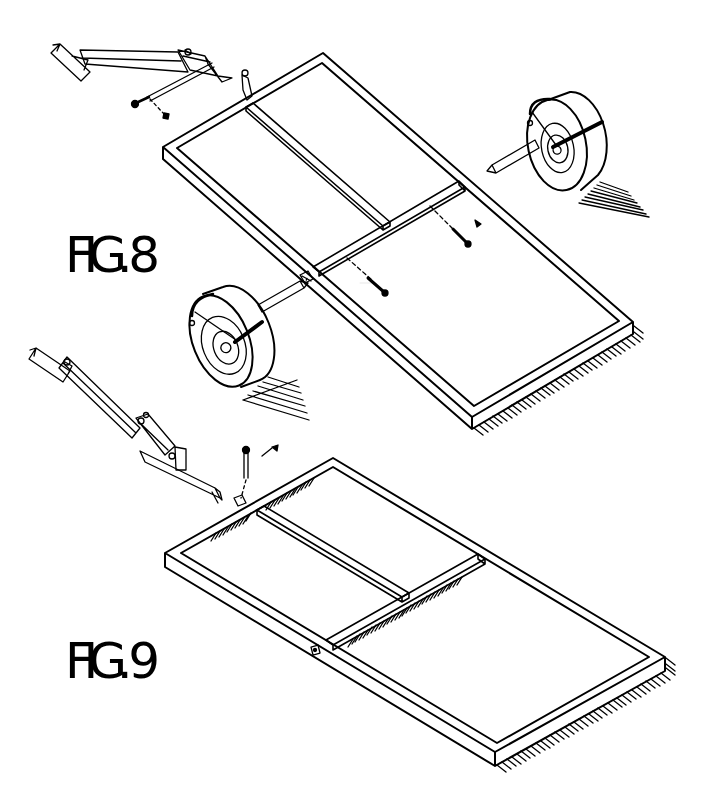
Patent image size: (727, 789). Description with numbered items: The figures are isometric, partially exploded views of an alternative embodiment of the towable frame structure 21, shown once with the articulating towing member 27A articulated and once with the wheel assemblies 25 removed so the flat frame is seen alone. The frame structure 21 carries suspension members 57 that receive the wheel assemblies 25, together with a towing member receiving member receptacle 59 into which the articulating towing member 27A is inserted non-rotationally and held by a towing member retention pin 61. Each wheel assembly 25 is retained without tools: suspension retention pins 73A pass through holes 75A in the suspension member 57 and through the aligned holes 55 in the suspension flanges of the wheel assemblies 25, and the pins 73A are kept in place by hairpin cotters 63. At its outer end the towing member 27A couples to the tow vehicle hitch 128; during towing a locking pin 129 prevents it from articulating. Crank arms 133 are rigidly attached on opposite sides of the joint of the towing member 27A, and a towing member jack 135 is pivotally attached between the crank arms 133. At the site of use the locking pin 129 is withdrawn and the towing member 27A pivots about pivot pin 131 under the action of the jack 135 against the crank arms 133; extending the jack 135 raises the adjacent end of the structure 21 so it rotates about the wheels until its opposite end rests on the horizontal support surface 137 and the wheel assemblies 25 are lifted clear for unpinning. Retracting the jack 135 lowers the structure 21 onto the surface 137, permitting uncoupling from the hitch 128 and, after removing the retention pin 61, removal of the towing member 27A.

In FIG. 8, the frame structure 21 is at (410, 104).
In FIG. 9, the frame structure 21 is at (442, 503).
In FIG. 8, the wheel assemblies 25 is at (525, 90).
In FIG. 8, the articulating towing member 27A is at (118, 48).
In FIG. 9, the articulating towing member 27A is at (82, 405).
In FIG. 8, the holes 55 is at (276, 308).
In FIG. 8, the suspension members 57 is at (430, 195).
In FIG. 9, the suspension members 57 is at (445, 573).
In FIG. 8, the towing member receiving member receptacle 59 is at (272, 113).
In FIG. 9, the towing member receiving member receptacle 59 is at (282, 518).
In FIG. 9, the towing member retention pin 61 is at (241, 456).
In FIG. 8, the hairpin cotters 63 is at (405, 270).
In FIG. 8, the suspension retention pins 73A is at (392, 293).
In FIG. 8, the holes 75A is at (350, 258).
In FIG. 9, the holes 75A is at (372, 637).
In FIG. 8, the tow vehicle hitch 128 is at (66, 84).
In FIG. 9, the tow vehicle hitch 128 is at (40, 385).
In FIG. 8, the locking pin 129 is at (134, 110).
In FIG. 8, the pivot pin 131 is at (210, 72).
In FIG. 9, the pivot pin 131 is at (152, 470).
In FIG. 8, the crank arms 133 is at (189, 49).
In FIG. 9, the crank arms 133 is at (144, 417).
In FIG. 8, the towing member jack 135 is at (205, 62).
In FIG. 9, the towing member jack 135 is at (162, 437).
In FIG. 8, the horizontal support surface 137 is at (568, 380).
In FIG. 9, the horizontal support surface 137 is at (243, 540).